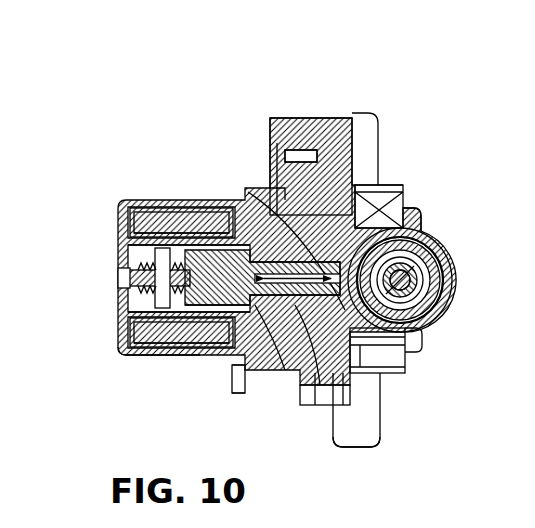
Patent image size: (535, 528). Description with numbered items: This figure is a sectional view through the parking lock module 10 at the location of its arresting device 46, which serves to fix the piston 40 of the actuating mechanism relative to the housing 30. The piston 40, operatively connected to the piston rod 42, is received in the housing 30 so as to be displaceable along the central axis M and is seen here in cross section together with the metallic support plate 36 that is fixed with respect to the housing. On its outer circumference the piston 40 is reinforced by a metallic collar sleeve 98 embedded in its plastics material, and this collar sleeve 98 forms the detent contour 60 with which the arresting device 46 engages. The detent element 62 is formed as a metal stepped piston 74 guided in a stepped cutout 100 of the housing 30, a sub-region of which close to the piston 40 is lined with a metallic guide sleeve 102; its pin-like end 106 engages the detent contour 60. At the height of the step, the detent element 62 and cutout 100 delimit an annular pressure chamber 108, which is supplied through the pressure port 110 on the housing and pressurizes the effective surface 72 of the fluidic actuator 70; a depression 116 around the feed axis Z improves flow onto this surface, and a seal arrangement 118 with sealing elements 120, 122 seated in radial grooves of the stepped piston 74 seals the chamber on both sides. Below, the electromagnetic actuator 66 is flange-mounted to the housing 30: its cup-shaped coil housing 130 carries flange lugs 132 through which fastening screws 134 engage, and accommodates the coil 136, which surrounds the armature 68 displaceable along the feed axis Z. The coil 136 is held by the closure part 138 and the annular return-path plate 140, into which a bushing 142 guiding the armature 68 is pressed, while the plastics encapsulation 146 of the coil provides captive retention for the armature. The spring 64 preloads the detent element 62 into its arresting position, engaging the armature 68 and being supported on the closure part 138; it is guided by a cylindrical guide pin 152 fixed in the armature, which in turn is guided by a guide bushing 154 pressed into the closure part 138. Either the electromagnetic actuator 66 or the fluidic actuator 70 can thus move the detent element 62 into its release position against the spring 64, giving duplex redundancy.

The parking lock module 10 is at (371, 82).
The housing 30 is at (309, 115).
The support plate 36 is at (346, 448).
The piston 40 is at (448, 272).
The piston rod 42 is at (438, 262).
The arresting device 46 is at (184, 348).
The detent contour 60 is at (436, 298).
The detent element 62 is at (404, 226).
The spring 64 is at (122, 262).
The electromagnetic actuator 66 is at (140, 216).
The armature 68 is at (181, 248).
The fluidic actuator 70 is at (360, 188).
The effective surface 72 is at (318, 372).
The stepped piston 74 is at (219, 242).
The collar sleeve 98 is at (449, 285).
The cutout 100 is at (230, 374).
The guide sleeve 102 is at (356, 330).
The pin-like end 106 is at (410, 232).
The annular pressure chamber 108 is at (284, 192).
The pressure port 110 is at (268, 146).
The depression 116 is at (343, 438).
The seal arrangement 118 is at (358, 373).
The sealing element 120 is at (404, 190).
The sealing element 122 is at (300, 372).
The coil housing 130 is at (140, 356).
The flange lug 132 is at (233, 388).
The fastening screw 134 is at (236, 394).
The coil 136 is at (150, 350).
The closure part 138 is at (114, 359).
The return-path plate 140 is at (208, 325).
The bushing 142 is at (195, 256).
The plastics encapsulation 146 is at (146, 320).
The guide pin 152 is at (122, 300).
The guide bushing 154 is at (128, 280).
The feed axis Z is at (279, 258).
The central axis M is at (422, 325).